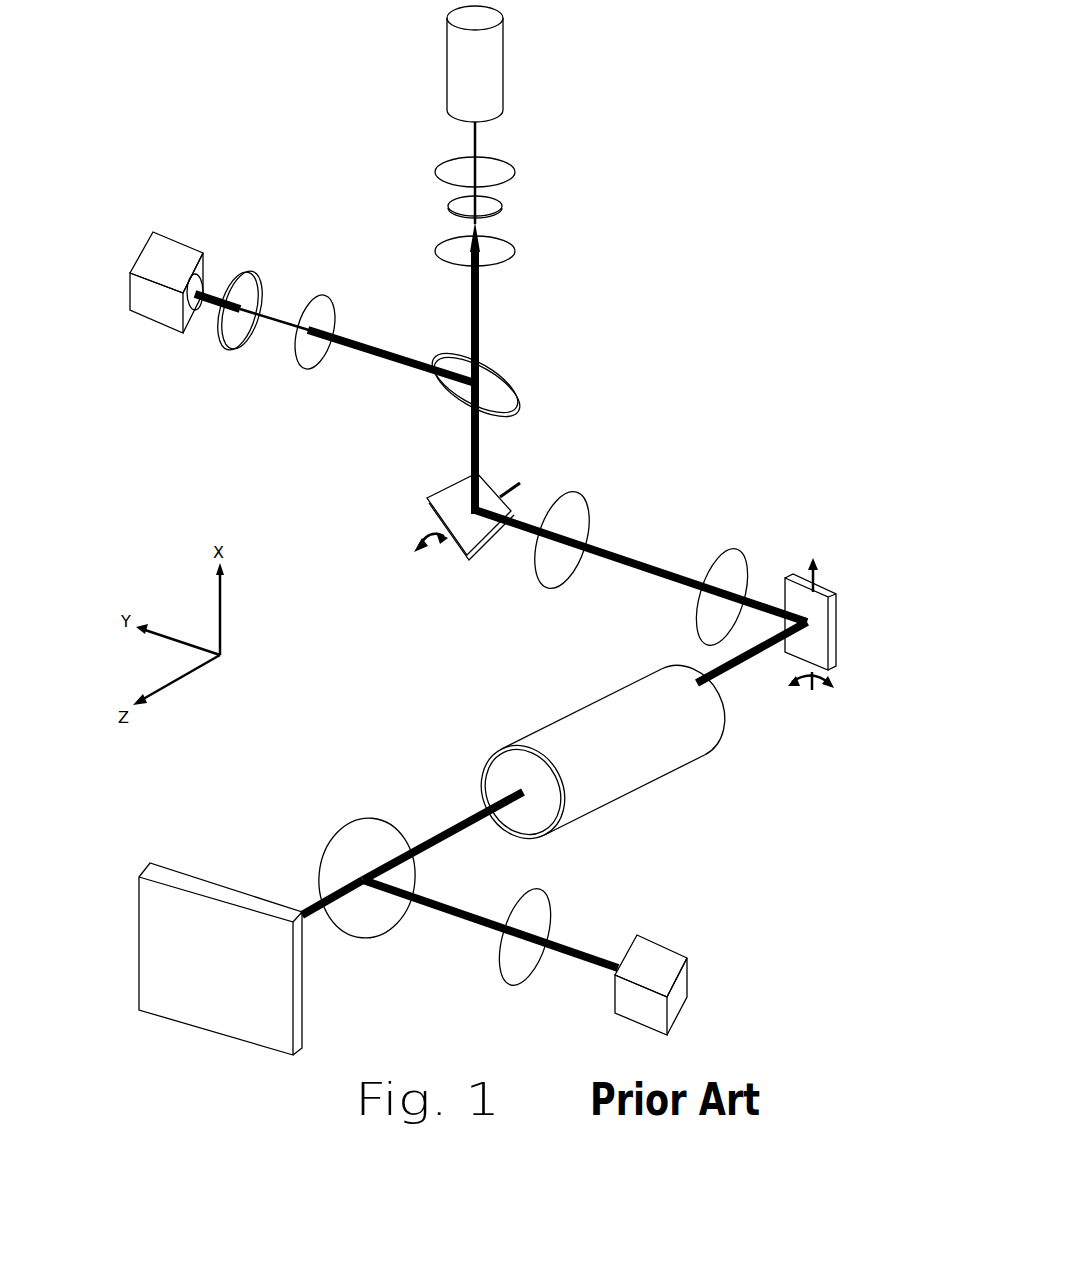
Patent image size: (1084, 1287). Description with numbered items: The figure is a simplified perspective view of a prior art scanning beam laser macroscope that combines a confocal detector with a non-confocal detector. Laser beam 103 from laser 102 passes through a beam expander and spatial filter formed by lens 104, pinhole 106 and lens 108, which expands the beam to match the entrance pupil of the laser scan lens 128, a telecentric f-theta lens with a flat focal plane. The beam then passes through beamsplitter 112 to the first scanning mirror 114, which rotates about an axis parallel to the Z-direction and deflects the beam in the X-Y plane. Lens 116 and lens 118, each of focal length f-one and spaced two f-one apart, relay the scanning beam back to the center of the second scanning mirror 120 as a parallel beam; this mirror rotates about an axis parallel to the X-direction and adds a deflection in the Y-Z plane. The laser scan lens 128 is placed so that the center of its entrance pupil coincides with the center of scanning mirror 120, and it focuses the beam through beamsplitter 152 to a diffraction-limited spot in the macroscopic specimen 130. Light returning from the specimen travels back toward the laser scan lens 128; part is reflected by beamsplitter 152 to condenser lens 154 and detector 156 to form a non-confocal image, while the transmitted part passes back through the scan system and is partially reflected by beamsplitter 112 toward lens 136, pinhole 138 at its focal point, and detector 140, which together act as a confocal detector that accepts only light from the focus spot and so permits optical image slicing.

The laser 102 is at (503, 66).
The laser beam 103 is at (478, 140).
The lens 104 is at (515, 172).
The pinhole 106 is at (502, 208).
The lens 108 is at (515, 252).
The beamsplitter 112 is at (512, 386).
The first scanning mirror 114 is at (447, 487).
The lens 116 is at (670, 487).
The lens 118 is at (800, 517).
The second scanning mirror 120 is at (915, 590).
The laser scan lens 128 is at (655, 776).
The macroscopic specimen 130 is at (302, 1010).
The lens 136 is at (322, 364).
The pinhole 138 is at (245, 340).
The detector 140 is at (160, 328).
The beamsplitter 152 is at (325, 830).
The condenser lens 154 is at (540, 905).
The detector 156 is at (688, 978).